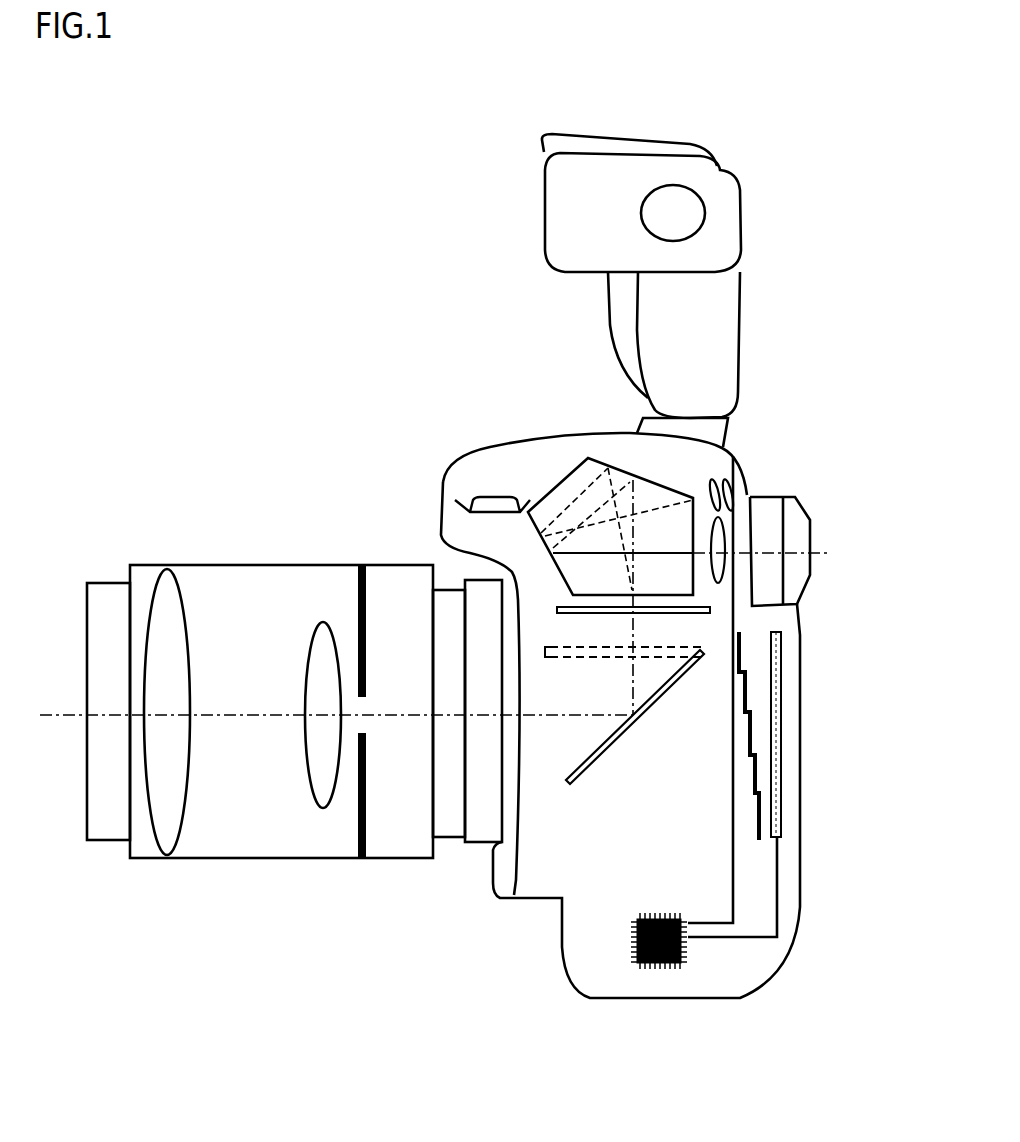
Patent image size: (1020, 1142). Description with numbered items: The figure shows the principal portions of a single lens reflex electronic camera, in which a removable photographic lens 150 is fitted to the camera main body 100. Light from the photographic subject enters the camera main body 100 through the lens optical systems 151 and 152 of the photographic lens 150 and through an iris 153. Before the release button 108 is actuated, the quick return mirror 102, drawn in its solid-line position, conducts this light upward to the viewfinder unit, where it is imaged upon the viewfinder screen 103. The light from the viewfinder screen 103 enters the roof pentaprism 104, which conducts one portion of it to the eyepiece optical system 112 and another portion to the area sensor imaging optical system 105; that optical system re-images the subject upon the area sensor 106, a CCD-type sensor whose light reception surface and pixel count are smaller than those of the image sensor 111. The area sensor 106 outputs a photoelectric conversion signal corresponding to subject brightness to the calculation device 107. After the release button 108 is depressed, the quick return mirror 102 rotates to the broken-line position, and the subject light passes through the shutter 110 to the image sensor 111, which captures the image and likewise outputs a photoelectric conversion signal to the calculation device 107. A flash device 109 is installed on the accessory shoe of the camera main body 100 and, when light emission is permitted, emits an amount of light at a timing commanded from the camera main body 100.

The camera main body 100 is at (680, 1002).
The quick return mirror 102 is at (568, 786).
The viewfinder screen 103 is at (711, 612).
The roof pentaprism 104 is at (556, 482).
The area sensor imaging optical system 105 is at (705, 479).
The area sensor 106 is at (729, 473).
The calculation device 107 is at (691, 965).
The release button 108 is at (465, 499).
The flash device 109 is at (708, 289).
The shutter 110 is at (758, 778).
The image sensor 111 is at (779, 725).
The eyepiece optical system 112 is at (720, 563).
The photographic lens 150 is at (294, 743).
The lens optical system 151 is at (167, 666).
The lens optical system 152 is at (319, 658).
The iris 153 is at (363, 564).